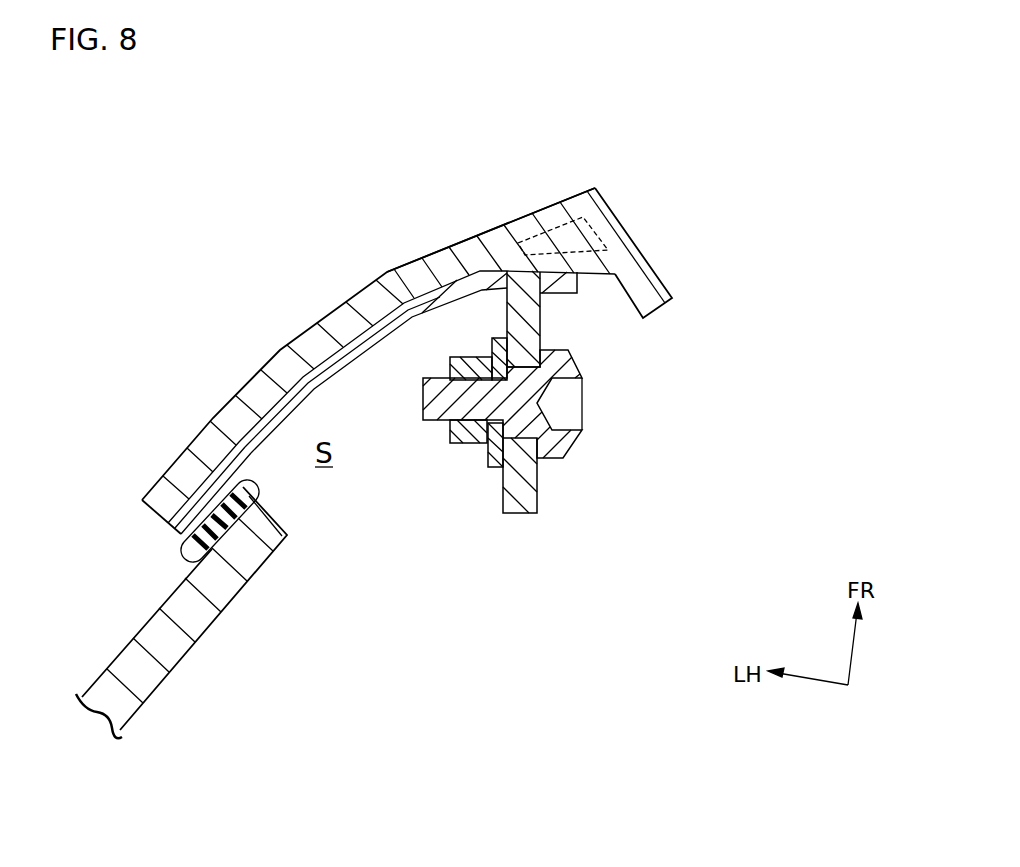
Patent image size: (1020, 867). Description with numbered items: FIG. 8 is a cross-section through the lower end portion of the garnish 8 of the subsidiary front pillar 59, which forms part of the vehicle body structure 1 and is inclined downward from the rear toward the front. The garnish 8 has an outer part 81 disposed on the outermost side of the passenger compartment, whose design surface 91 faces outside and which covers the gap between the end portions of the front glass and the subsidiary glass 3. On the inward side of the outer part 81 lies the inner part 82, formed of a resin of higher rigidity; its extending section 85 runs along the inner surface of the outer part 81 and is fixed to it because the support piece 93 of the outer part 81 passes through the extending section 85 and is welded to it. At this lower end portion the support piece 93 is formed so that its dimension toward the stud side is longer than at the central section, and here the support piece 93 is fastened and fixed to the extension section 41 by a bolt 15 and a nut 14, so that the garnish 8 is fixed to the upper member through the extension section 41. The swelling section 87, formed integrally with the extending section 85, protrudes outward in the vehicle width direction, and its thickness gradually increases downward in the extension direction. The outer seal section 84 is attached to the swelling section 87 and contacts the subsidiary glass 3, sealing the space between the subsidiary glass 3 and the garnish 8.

The vehicle body structure 1 is at (735, 140).
The subsidiary glass 3 is at (103, 672).
The garnish 8 is at (618, 217).
The nut 14 is at (462, 428).
The bolt 15 is at (528, 413).
The extension section 41 is at (492, 453).
The subsidiary front pillar 59 is at (752, 282).
The outer part 81 is at (437, 267).
The inner part 82 is at (343, 362).
The outer seal section 84 is at (193, 552).
The extending section 85 is at (417, 308).
The swelling section 87 is at (210, 493).
The design surface 91 is at (228, 405).
The support piece 93 is at (530, 317).